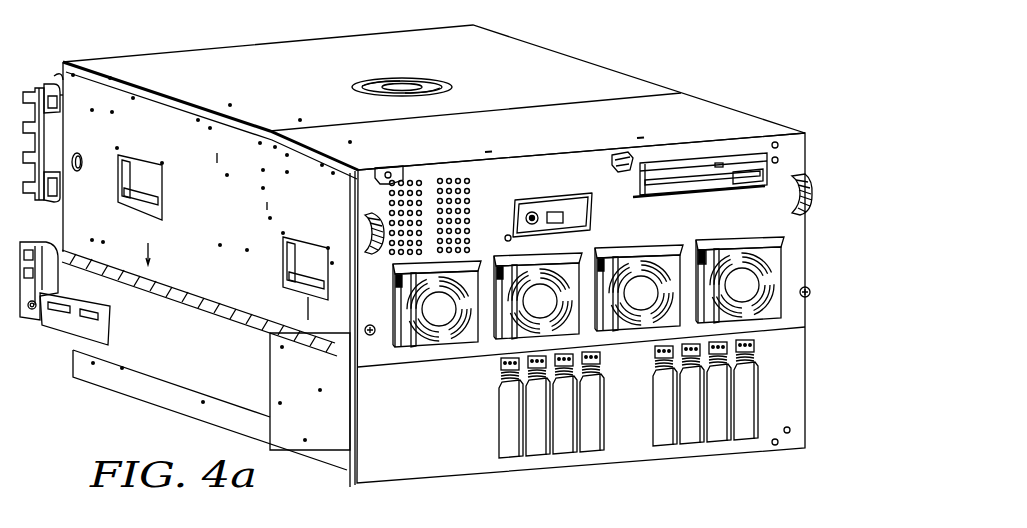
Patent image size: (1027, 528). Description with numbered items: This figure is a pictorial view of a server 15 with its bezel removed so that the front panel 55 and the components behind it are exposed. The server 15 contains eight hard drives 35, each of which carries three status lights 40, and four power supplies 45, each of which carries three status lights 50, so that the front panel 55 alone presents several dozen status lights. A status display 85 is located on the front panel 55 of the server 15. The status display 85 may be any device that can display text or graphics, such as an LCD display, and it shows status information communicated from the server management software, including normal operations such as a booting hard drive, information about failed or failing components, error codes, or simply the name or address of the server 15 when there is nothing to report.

The server 15 is at (640, 63).
The hard drives 35 is at (745, 437).
The status lights 40 is at (492, 374).
The power supplies 45 is at (781, 262).
The status lights 50 is at (696, 252).
The front panel 55 is at (803, 153).
The status display 85 is at (560, 213).